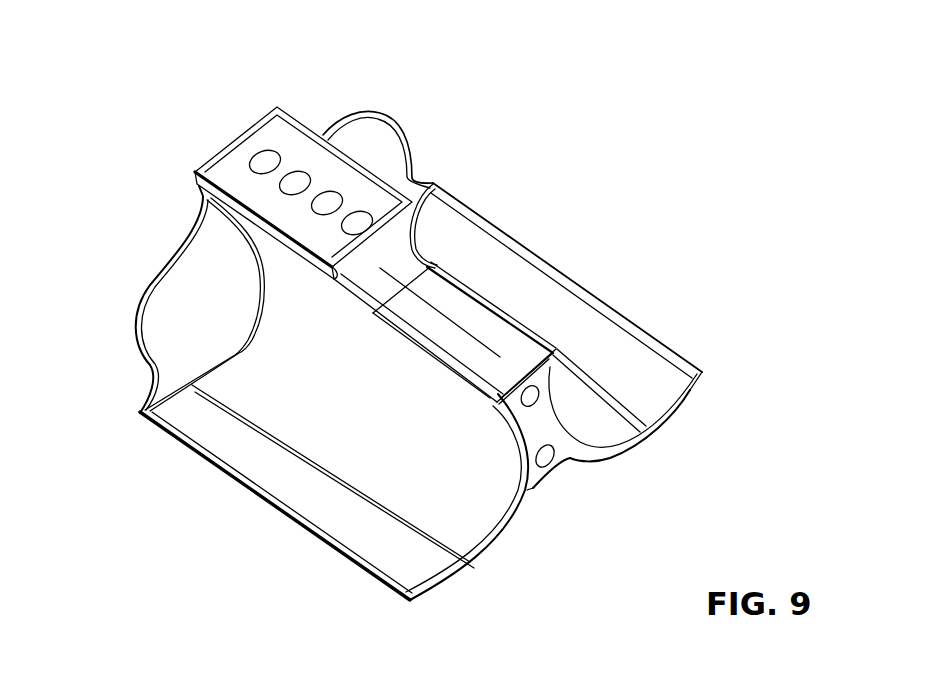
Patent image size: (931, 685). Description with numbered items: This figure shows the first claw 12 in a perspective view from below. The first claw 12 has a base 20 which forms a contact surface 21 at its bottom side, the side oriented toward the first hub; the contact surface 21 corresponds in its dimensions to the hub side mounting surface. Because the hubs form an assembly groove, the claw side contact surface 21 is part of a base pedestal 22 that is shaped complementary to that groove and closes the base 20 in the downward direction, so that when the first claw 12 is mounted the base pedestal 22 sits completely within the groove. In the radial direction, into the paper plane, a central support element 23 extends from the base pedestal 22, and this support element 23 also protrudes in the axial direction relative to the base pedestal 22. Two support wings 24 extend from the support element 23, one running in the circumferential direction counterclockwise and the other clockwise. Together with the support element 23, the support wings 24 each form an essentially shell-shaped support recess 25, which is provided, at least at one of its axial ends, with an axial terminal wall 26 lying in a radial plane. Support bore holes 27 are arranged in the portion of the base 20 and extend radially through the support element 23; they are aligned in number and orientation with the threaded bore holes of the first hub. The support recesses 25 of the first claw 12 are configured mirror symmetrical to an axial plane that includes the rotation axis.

The first claw 12 is at (623, 115).
The base 20 is at (277, 95).
The contact surface 21 is at (343, 172).
The base pedestal 22 is at (376, 255).
The central support element 23 is at (549, 485).
The support wings 24 is at (630, 460).
The support recess 25 is at (638, 397).
The axial terminal wall 26 is at (375, 143).
The support bore holes 27 is at (265, 160).